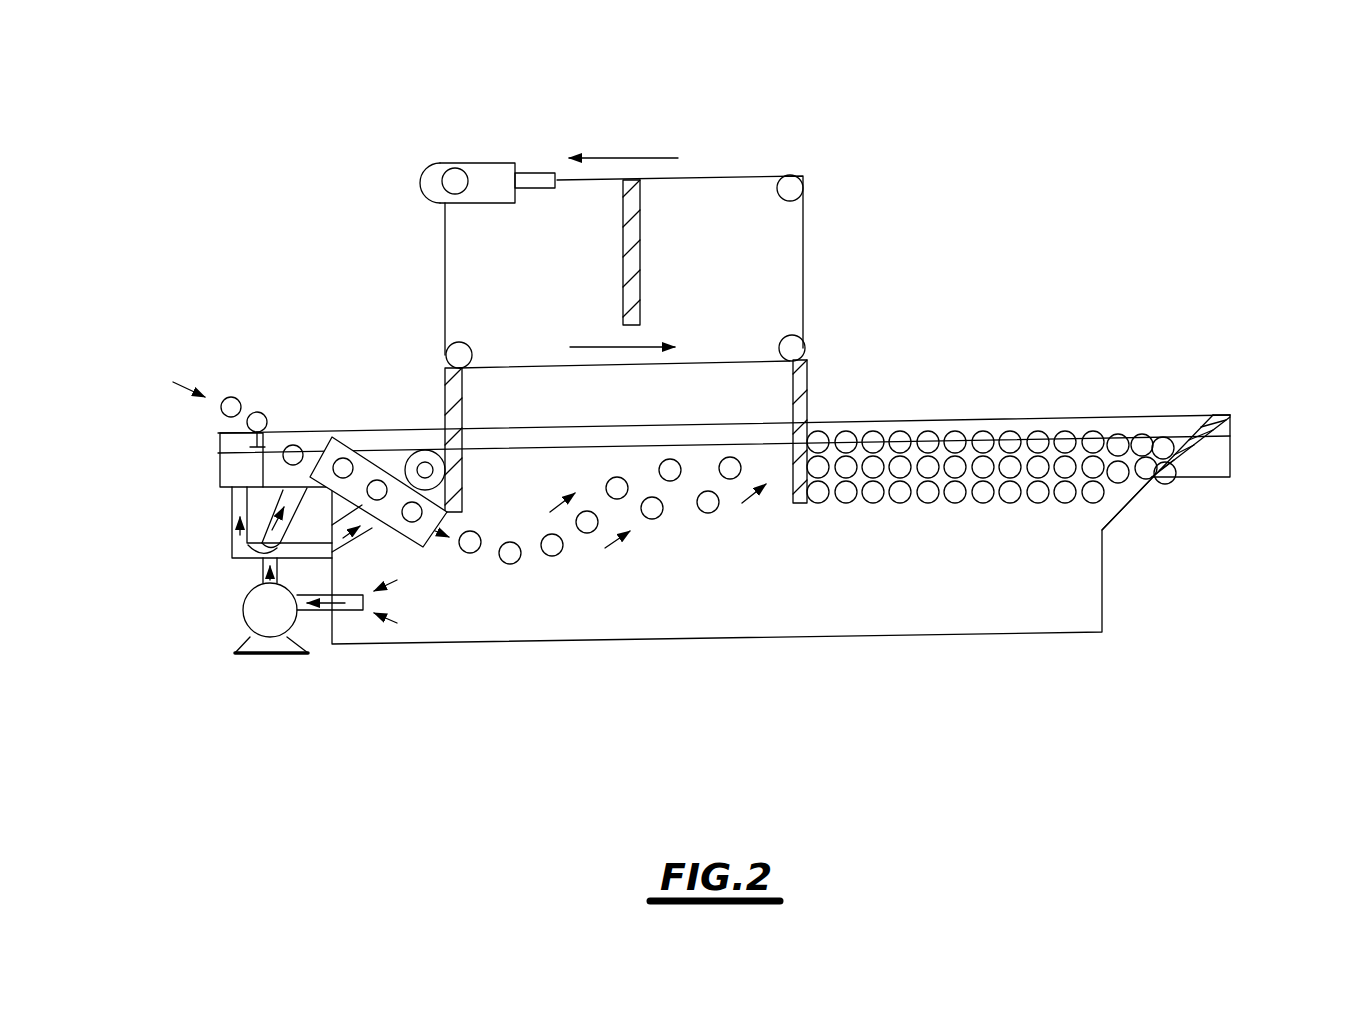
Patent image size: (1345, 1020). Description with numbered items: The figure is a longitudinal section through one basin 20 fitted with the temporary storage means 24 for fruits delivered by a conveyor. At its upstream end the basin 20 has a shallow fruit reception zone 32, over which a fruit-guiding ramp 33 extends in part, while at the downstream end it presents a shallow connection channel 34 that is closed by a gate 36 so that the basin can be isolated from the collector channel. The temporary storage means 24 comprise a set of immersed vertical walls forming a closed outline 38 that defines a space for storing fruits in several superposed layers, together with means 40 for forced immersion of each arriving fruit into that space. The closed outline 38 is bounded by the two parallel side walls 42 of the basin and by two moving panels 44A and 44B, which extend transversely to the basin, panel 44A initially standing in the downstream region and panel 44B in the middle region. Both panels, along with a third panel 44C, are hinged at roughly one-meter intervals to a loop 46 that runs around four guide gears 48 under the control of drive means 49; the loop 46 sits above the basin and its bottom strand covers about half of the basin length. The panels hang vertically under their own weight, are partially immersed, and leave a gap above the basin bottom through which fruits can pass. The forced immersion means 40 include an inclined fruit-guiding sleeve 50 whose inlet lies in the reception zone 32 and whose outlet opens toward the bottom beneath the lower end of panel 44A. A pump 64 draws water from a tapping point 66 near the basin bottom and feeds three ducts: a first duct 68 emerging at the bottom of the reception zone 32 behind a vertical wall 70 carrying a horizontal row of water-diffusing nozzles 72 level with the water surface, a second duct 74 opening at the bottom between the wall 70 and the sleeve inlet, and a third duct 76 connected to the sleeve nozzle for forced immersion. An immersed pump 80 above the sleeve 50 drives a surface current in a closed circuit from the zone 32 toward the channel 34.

The basin 20 is at (768, 613).
The temporary storage means 24 is at (683, 275).
The fruit reception zone 32 is at (293, 413).
The fruit-guiding ramp 33 is at (275, 443).
The connection channel 34 is at (1195, 482).
The gate 36 is at (1197, 447).
The closed outline 38 is at (822, 412).
The forced immersion means 40 is at (433, 554).
The side walls 42 is at (565, 477).
The moving panel 44A is at (445, 415).
The moving panel 44B is at (800, 403).
The third panel 44C is at (623, 248).
The loop 46 is at (805, 255).
The guide gears 48 is at (790, 177).
The drive means 49 is at (497, 161).
The fruit-guiding sleeve 50 is at (366, 445).
The pump 64 is at (270, 612).
The water admission tapping point 66 is at (322, 612).
The first duct 68 is at (232, 520).
The vertical wall 70 is at (262, 477).
The nozzles 72 is at (262, 462).
The second duct 74 is at (253, 547).
The third duct 76 is at (370, 533).
The immersed pump 80 is at (425, 468).